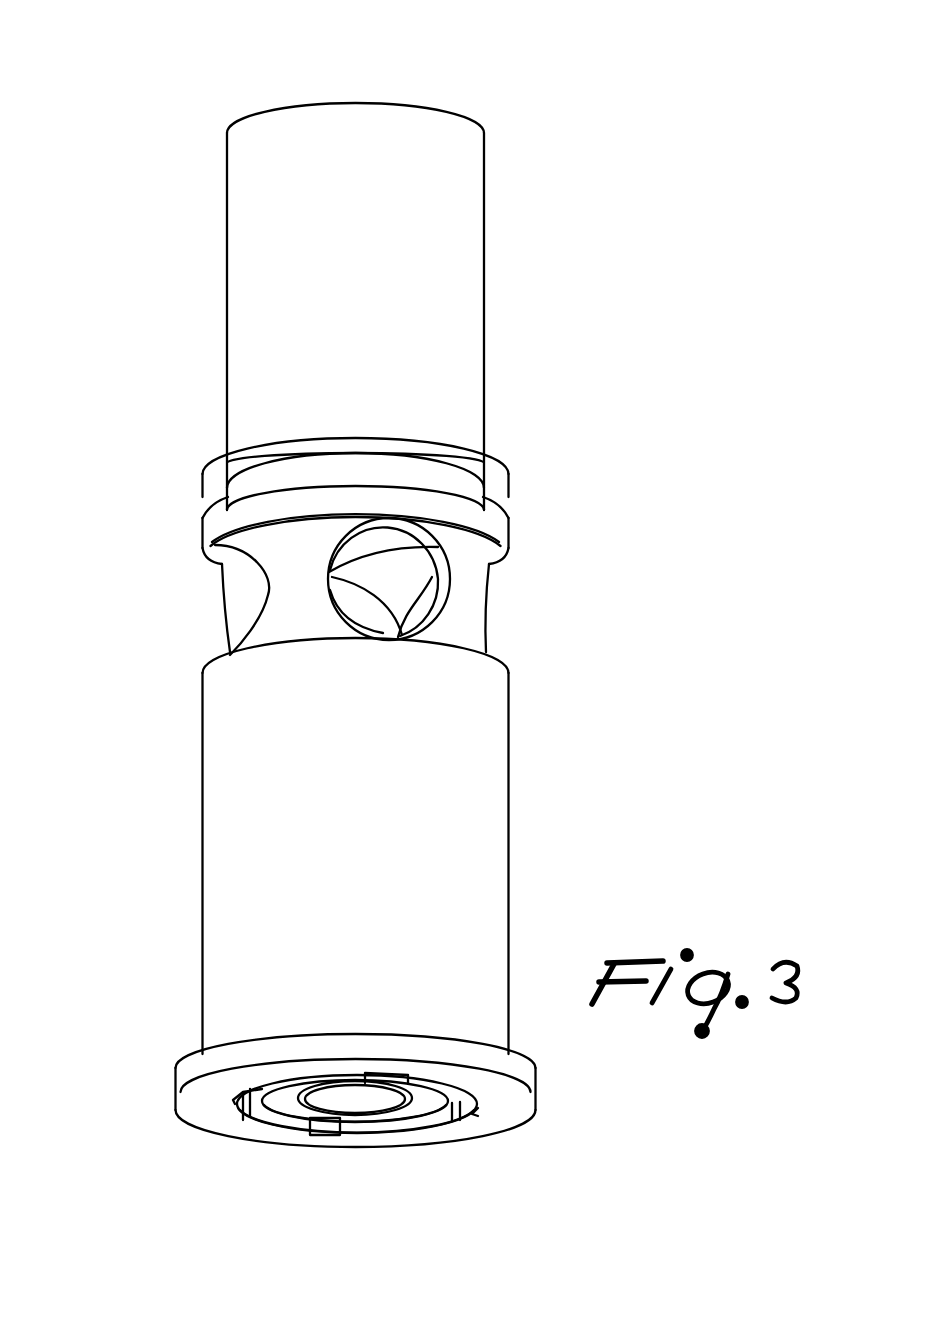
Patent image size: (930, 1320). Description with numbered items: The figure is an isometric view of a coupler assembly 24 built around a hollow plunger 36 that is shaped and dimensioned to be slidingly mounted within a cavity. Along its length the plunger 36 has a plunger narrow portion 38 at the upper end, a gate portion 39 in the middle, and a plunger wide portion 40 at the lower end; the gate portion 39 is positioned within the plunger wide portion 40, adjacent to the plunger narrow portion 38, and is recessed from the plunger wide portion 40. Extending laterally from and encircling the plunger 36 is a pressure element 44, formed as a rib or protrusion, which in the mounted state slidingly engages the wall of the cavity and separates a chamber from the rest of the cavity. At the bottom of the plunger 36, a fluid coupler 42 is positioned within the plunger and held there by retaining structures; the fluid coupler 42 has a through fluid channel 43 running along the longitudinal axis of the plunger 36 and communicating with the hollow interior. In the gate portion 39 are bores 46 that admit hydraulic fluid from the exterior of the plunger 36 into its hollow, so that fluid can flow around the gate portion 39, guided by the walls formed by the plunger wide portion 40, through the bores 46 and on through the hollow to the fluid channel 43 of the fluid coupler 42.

The coupler assembly 24 is at (530, 98).
The hollow plunger 36 is at (166, 501).
The plunger narrow portion 38 is at (300, 275).
The gate portion 39 is at (493, 608).
The plunger wide portion 40 is at (272, 873).
The fluid coupler 42 is at (293, 1110).
The fluid channel 43 is at (358, 1102).
The pressure element 44 is at (452, 452).
The bore 46 is at (362, 572).